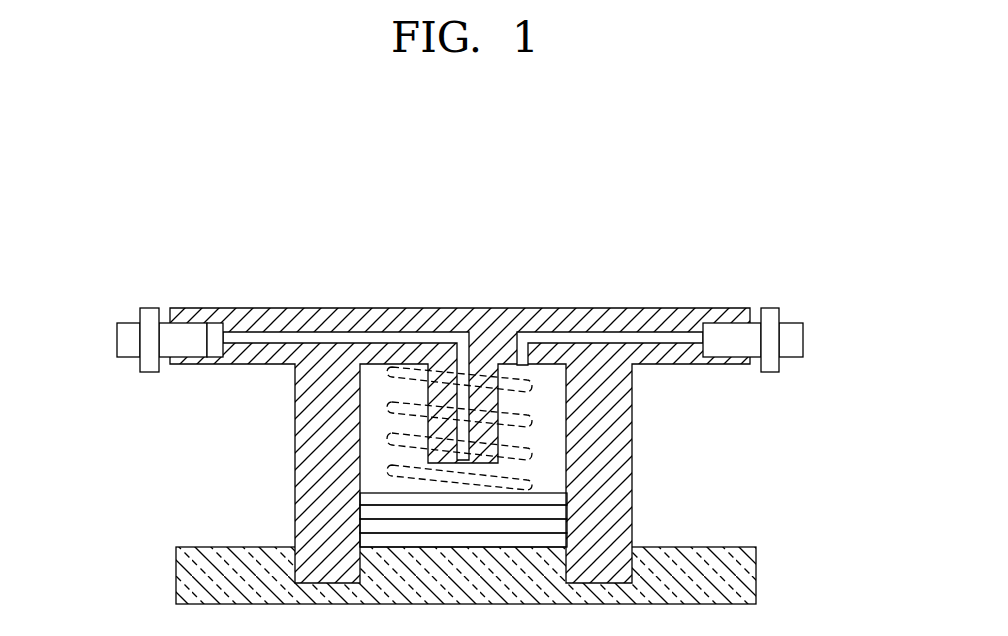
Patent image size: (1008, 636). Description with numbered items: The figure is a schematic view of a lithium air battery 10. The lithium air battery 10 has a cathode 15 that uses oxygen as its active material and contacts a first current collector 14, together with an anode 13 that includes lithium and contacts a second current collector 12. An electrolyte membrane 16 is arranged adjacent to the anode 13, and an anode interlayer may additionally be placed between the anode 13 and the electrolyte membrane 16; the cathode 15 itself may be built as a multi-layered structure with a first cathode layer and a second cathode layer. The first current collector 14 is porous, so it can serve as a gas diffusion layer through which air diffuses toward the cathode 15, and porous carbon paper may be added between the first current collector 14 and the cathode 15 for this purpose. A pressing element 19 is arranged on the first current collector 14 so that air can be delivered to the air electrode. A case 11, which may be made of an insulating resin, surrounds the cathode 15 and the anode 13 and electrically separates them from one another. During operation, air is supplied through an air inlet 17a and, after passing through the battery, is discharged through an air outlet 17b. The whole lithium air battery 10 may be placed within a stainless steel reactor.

The lithium air battery 10 is at (787, 250).
The case 11 is at (303, 421).
The second current collector 12 is at (748, 576).
The anode 13 is at (553, 540).
The first current collector 14 is at (553, 501).
The cathode 15 is at (553, 513).
The electrolyte membrane 16 is at (553, 526).
The air inlet 17a is at (97, 339).
The air outlet 17b is at (813, 339).
The pressing element 19 is at (532, 421).